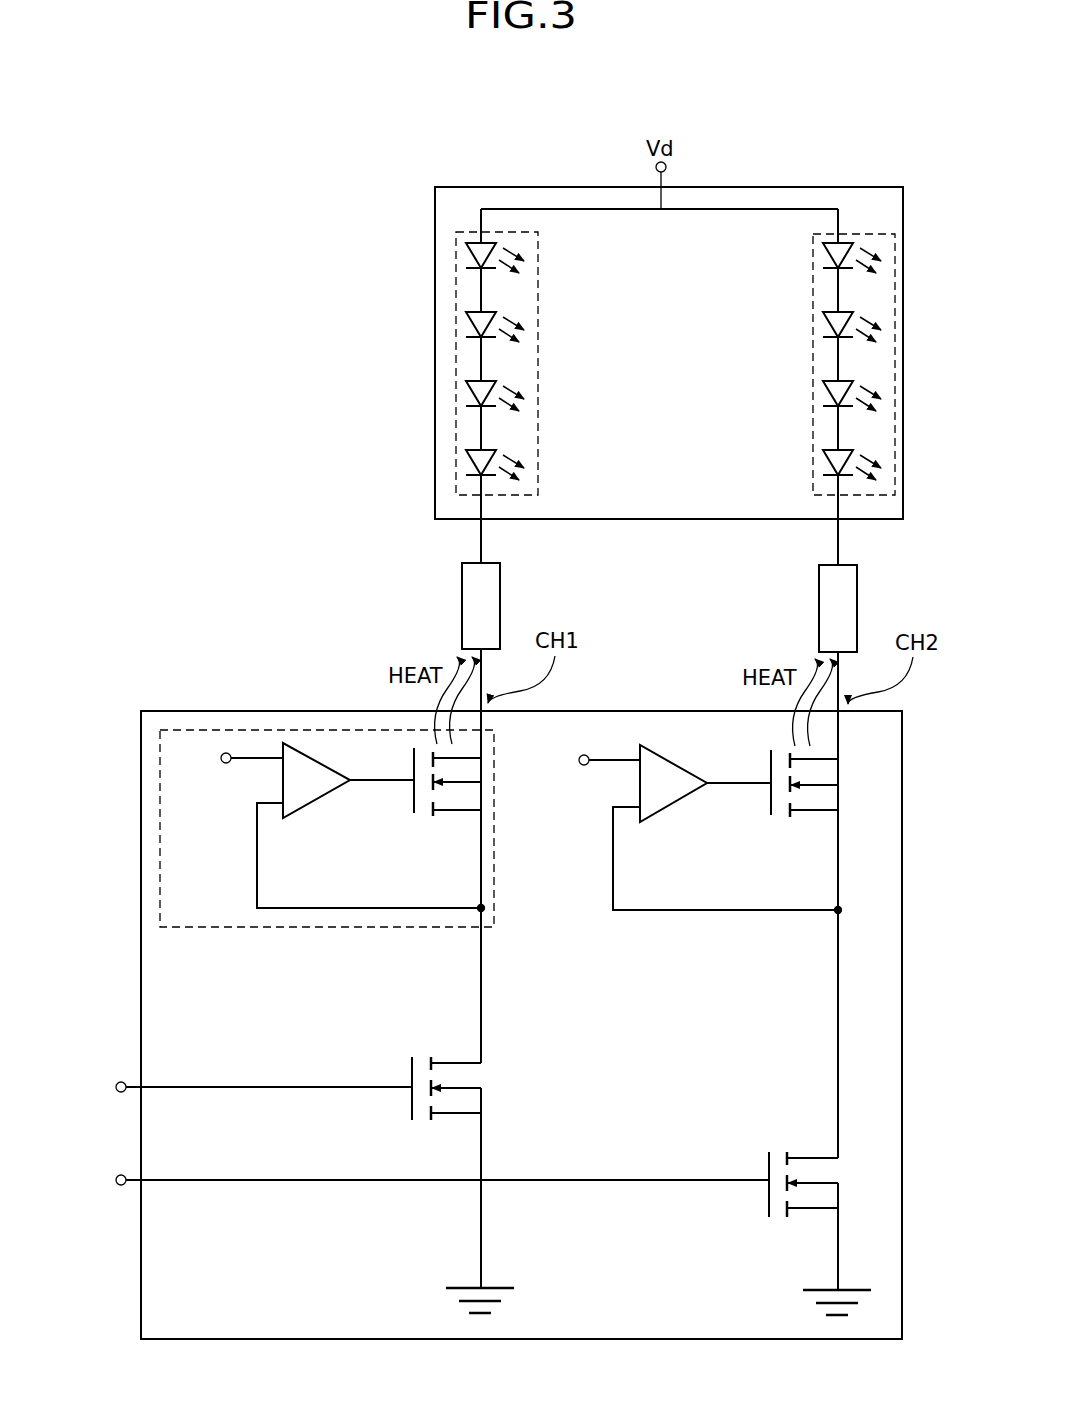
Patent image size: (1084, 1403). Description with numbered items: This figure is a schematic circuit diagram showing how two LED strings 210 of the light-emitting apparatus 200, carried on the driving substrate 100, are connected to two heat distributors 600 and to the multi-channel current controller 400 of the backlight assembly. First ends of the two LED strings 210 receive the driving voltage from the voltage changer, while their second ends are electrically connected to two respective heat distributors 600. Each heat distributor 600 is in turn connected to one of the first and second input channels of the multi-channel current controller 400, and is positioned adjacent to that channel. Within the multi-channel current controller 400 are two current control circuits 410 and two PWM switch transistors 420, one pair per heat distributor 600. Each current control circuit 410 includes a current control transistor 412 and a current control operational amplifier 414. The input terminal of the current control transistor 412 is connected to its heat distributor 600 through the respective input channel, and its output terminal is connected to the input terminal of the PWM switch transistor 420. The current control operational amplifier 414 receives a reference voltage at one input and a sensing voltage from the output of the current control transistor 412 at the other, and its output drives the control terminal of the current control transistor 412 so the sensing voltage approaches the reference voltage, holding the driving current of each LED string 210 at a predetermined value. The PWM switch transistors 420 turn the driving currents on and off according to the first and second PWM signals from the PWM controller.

The driving substrate 100 is at (435, 352).
The light-emitting apparatus 200 is at (825, 258).
The LED string 210 is at (538, 363).
The multi-channel current controller 400 is at (222, 710).
The current control circuit 410 is at (376, 866).
The current control transistor 412 is at (432, 824).
The current control operational amplifier 414 is at (306, 822).
The PWM switch transistor 420 is at (492, 1089).
The heat distributor 600 is at (458, 597).